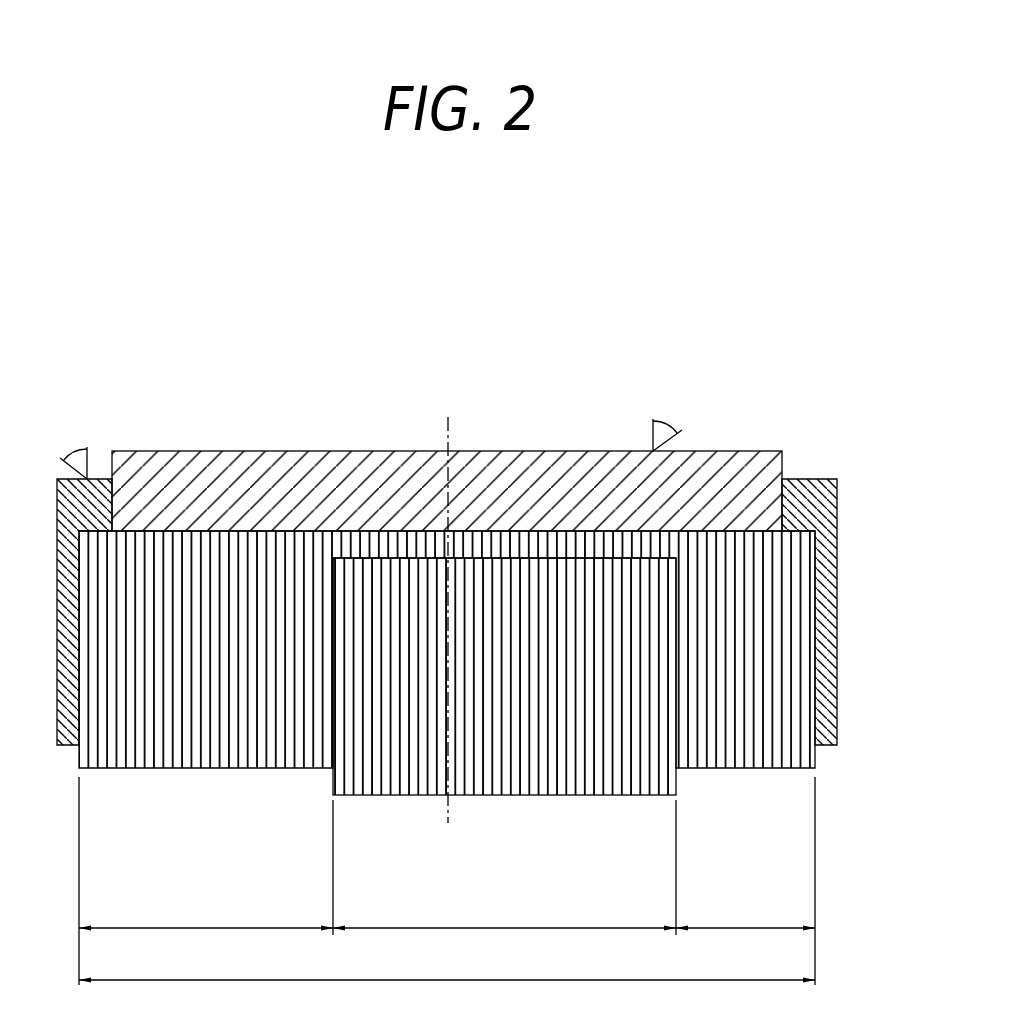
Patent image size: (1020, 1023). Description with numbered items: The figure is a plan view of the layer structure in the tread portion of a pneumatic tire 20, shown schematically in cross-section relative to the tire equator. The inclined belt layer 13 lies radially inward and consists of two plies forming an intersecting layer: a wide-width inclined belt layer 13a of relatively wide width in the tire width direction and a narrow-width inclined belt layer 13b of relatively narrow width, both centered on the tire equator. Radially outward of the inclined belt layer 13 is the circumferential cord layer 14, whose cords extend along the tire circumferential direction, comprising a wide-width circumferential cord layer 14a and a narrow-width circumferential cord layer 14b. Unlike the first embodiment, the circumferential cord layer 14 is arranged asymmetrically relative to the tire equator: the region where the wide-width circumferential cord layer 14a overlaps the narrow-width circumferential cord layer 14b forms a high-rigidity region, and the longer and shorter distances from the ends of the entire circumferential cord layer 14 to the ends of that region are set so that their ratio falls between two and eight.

The pneumatic tire 20 is at (807, 290).
The inclined belt layer 13 is at (902, 443).
The wide-width inclined belt layer 13a is at (806, 524).
The narrow-width inclined belt layer 13b is at (755, 469).
The circumferential cord layer 14 is at (267, 842).
The wide-width circumferential cord layer 14a is at (183, 737).
The narrow-width circumferential cord layer 14b is at (387, 762).